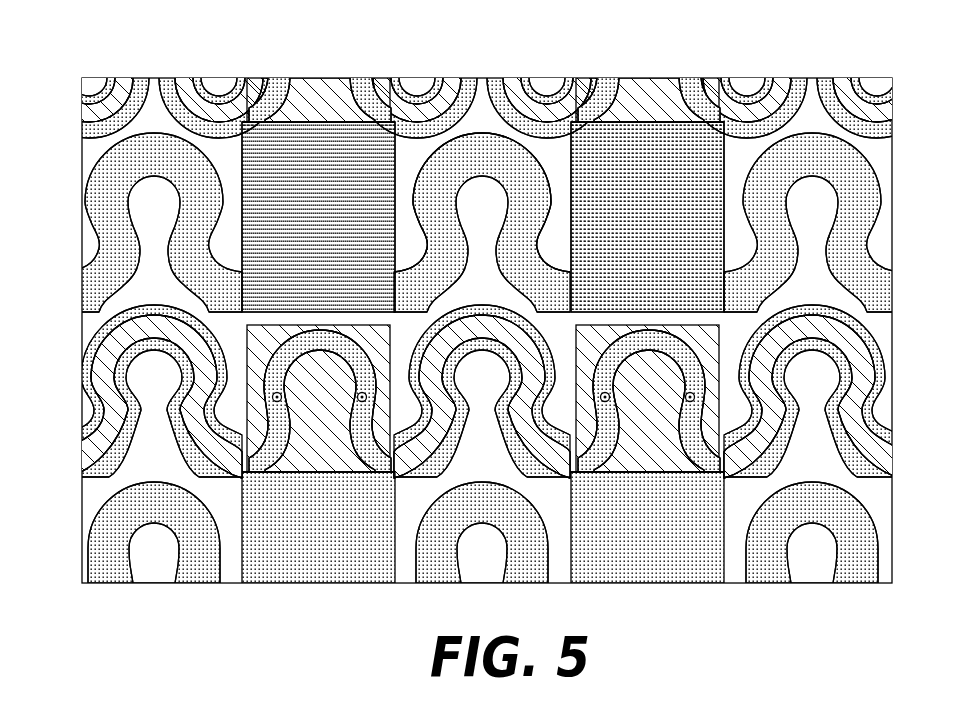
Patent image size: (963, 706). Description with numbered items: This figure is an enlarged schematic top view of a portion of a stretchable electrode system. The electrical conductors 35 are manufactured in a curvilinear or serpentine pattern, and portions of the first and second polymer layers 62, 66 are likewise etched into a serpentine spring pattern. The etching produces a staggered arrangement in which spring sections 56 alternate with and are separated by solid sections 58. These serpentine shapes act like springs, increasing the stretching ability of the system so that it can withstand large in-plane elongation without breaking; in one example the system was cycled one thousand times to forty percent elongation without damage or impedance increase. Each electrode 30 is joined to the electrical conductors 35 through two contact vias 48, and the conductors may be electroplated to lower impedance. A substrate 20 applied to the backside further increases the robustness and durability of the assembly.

The substrate 20 is at (735, 515).
The electrode 30 is at (292, 128).
The electrical conductors 35 is at (110, 437).
The contact vias 48 is at (362, 388).
The spring sections 56 is at (514, 158).
The solid sections 58 is at (633, 158).
The first polymer layer 62 is at (328, 165).
The second polymer layer 66 is at (477, 152).